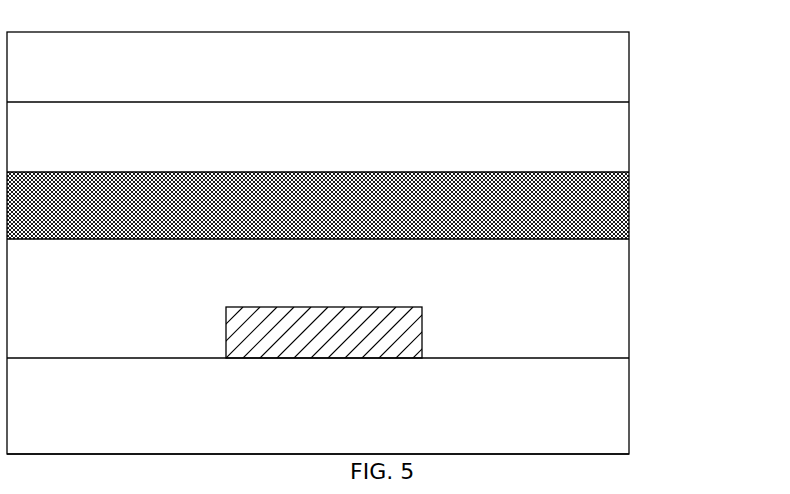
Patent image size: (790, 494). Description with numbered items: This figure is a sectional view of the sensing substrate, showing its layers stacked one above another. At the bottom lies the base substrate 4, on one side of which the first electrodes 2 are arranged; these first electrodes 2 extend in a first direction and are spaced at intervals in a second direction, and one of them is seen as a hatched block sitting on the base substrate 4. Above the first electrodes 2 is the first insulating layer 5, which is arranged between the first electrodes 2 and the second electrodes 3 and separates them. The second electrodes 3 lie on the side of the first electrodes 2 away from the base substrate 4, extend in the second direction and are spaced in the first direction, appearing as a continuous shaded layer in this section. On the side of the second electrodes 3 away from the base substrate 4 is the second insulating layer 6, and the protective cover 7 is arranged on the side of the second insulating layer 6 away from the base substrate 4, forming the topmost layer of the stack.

The protective cover 7 is at (615, 57).
The second insulating layer 6 is at (615, 142).
The second electrode 3 is at (615, 204).
The first insulating layer 5 is at (615, 282).
The first electrode 2 is at (410, 329).
The base substrate 4 is at (615, 407).